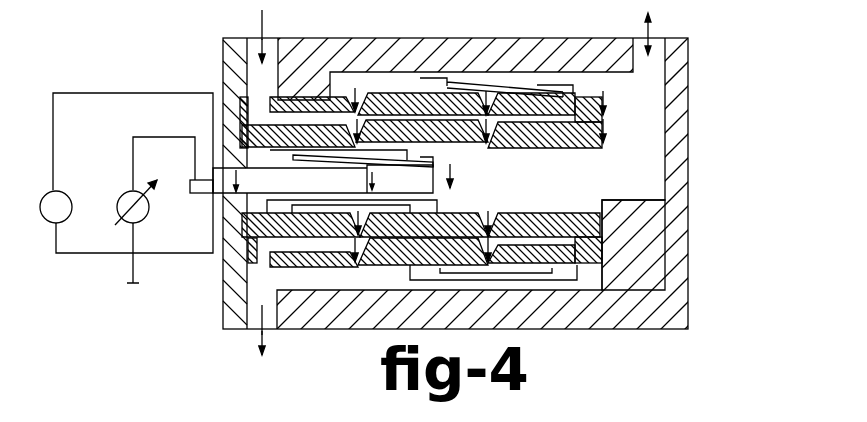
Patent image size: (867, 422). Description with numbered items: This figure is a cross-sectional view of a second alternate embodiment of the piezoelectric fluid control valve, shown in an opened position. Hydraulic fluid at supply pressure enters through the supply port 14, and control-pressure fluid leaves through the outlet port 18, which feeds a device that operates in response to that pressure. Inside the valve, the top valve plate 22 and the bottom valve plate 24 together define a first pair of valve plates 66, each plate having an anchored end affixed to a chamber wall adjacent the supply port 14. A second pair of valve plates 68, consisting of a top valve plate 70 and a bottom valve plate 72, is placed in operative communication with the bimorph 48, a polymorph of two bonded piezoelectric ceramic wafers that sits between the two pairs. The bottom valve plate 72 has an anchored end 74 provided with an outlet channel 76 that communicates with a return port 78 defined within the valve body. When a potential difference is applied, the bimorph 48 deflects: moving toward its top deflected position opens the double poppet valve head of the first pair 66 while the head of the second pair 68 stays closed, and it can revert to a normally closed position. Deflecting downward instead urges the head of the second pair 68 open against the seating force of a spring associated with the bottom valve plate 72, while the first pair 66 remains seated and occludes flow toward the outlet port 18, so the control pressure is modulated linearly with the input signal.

The supply port 14 is at (258, 100).
The outlet port 18 is at (653, 45).
The top valve plate 22 is at (593, 100).
The bottom valve plate 24 is at (593, 137).
The bimorph 48 is at (453, 173).
The first pair of valve plates 66 is at (602, 115).
The second pair of valve plates 68 is at (607, 223).
The top valve plate 70 is at (580, 213).
The bottom valve plate 72 is at (580, 258).
The anchored end 74 is at (290, 262).
The outlet channel 76 is at (260, 245).
The return port 78 is at (258, 337).